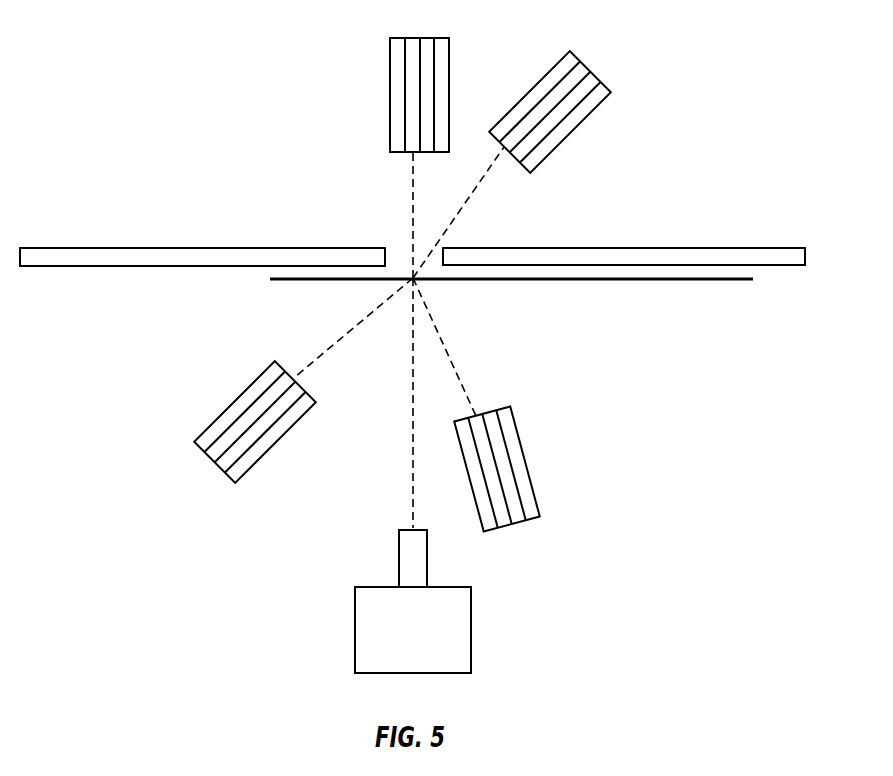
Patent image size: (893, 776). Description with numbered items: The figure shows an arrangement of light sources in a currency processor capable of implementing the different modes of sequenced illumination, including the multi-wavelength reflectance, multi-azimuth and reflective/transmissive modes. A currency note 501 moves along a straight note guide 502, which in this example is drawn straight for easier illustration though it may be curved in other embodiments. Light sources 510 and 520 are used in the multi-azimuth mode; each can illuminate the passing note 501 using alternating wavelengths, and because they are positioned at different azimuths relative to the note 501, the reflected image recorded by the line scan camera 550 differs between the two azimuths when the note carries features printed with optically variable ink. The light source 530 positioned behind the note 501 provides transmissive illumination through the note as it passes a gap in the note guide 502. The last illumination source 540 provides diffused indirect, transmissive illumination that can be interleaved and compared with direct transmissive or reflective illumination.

The currency note 501 is at (696, 282).
The note guide 502 is at (135, 247).
The light source 510 is at (212, 460).
The light source 520 is at (527, 462).
The light source 530 is at (420, 38).
The illumination source 540 is at (590, 72).
The line scan camera 550 is at (472, 628).